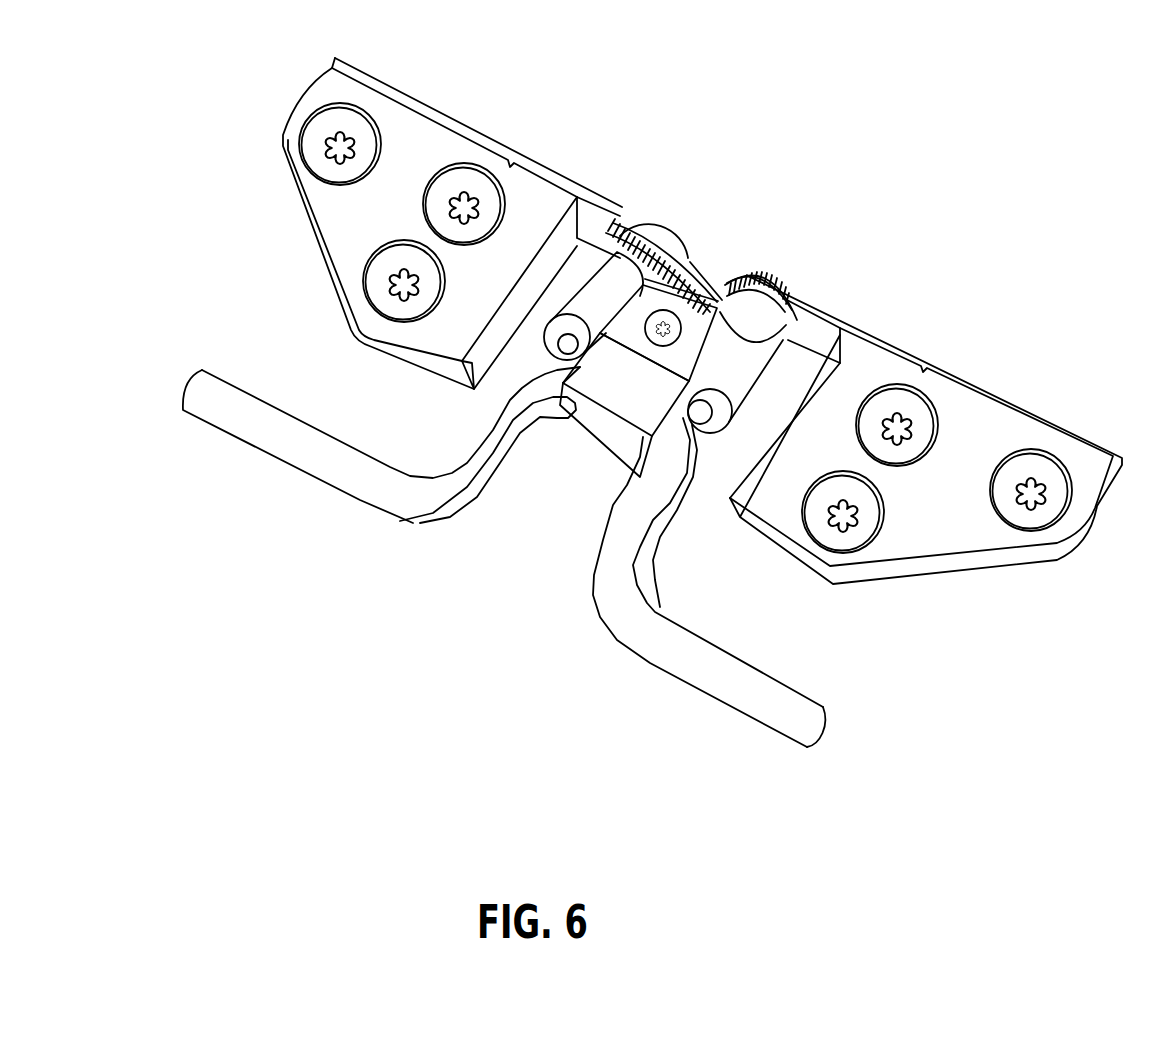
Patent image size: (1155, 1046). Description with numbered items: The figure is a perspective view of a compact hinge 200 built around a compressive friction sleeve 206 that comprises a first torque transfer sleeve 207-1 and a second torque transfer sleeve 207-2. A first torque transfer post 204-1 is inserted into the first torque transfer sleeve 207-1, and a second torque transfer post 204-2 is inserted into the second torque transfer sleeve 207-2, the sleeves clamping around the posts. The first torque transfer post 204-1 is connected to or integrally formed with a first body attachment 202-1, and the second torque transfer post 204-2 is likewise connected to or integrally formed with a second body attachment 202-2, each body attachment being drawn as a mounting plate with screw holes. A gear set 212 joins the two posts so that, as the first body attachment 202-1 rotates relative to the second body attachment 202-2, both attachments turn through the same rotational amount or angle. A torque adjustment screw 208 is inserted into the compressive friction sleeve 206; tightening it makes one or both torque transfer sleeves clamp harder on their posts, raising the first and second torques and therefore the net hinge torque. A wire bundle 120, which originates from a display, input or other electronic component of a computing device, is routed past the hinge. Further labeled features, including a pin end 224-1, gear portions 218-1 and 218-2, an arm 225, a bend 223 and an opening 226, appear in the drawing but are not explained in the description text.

The compact hinge 200 is at (1004, 112).
The first body attachment 202-1 is at (537, 187).
The second body attachment 202-2 is at (885, 368).
The first torque transfer post 204-1 is at (622, 221).
The second torque transfer post 204-2 is at (843, 367).
The first torque transfer sleeve 207-1 is at (586, 276).
The second torque transfer sleeve 207-2 is at (738, 349).
The first pin end 224-1 is at (562, 338).
The first gear 218-1 is at (704, 284).
The second gear 218-2 is at (722, 282).
The gear set 212 is at (726, 232).
The compressive friction sleeve 206 is at (741, 283).
The torque adjustment screw 208 is at (621, 433).
The first handle arm 225 is at (570, 370).
The wire bundle 120 is at (776, 691).
The handle bend 223 is at (655, 543).
The pivot hole 226 is at (739, 500).